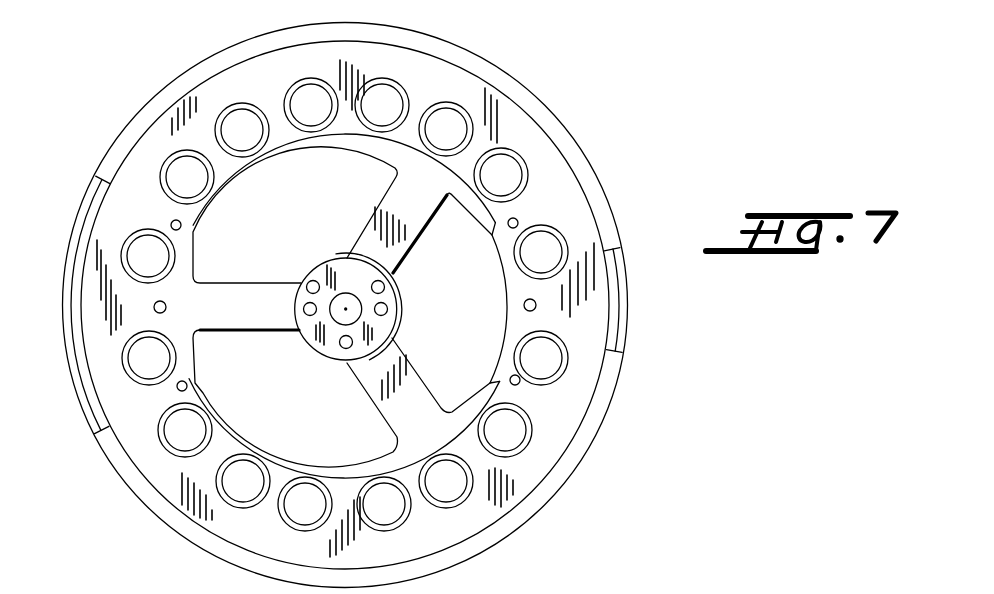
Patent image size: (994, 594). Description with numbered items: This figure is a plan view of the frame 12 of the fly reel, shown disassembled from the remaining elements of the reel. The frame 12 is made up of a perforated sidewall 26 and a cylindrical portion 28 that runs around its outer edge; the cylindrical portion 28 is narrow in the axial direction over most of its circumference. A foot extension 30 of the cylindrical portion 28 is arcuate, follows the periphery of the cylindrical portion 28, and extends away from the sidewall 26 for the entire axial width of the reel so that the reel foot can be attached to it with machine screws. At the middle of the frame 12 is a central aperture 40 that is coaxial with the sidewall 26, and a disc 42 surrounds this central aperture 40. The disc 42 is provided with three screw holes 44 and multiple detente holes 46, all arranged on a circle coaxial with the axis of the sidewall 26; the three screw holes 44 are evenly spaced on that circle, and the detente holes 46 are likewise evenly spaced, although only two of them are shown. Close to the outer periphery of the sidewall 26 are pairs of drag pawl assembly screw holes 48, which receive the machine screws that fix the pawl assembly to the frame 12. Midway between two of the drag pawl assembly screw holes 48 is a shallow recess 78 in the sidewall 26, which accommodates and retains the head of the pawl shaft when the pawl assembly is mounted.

The frame 12 is at (570, 478).
The perforated sidewall 26 is at (517, 281).
The cylindrical portion 28 is at (513, 532).
The foot extension 30 is at (72, 388).
The central aperture 40 is at (349, 293).
The disc 42 is at (307, 348).
The screw holes 44 is at (307, 282).
The detente holes 46 is at (304, 309).
The drag pawl assembly screw holes 48 is at (181, 229).
The shallow recess 78 is at (166, 306).